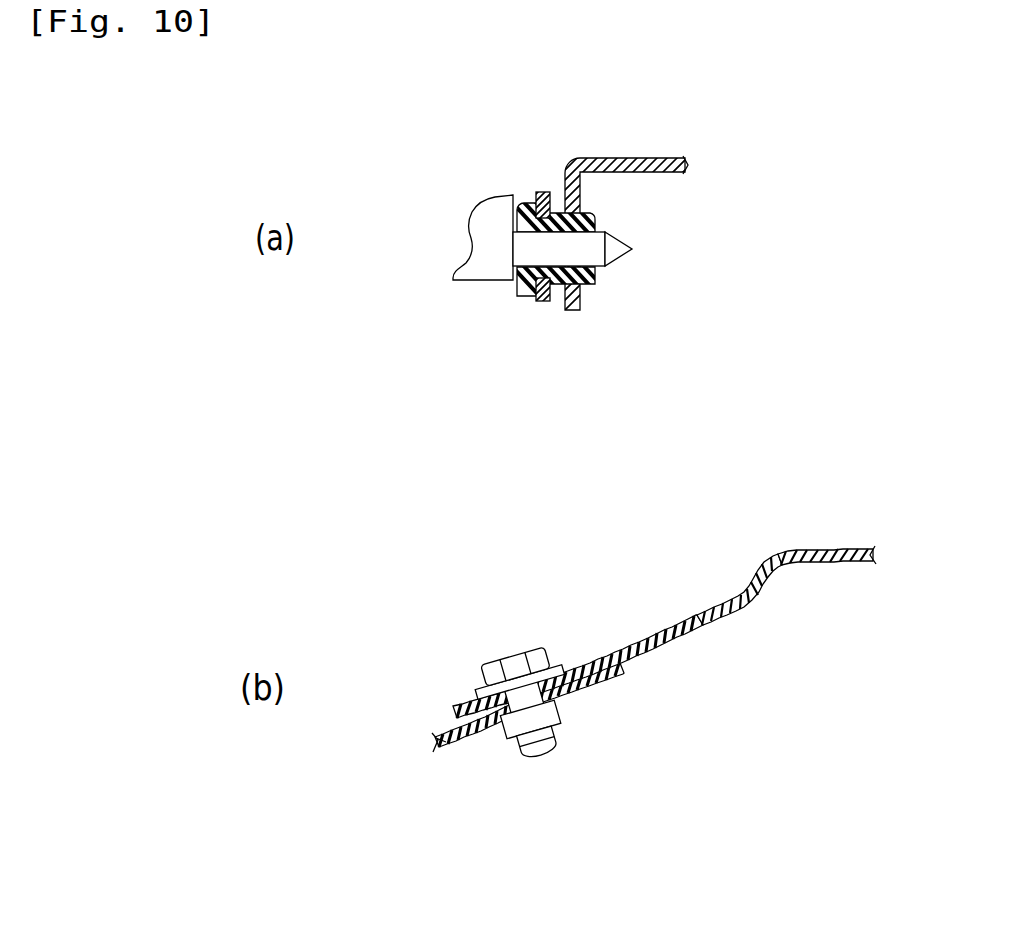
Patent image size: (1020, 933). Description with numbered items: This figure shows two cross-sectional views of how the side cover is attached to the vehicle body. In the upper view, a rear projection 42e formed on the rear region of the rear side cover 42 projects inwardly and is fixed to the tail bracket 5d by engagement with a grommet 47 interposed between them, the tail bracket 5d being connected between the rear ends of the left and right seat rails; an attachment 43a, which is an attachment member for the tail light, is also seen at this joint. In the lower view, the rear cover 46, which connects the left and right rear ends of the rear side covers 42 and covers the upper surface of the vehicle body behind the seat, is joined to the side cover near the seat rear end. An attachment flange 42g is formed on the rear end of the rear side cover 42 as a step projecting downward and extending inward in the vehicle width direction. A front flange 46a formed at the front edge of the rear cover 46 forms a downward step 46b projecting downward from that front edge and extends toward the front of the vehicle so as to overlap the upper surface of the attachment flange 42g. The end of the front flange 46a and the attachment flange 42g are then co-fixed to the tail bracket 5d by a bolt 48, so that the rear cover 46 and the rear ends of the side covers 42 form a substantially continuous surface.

The rear side cover 42 is at (468, 195).
The projection 42e is at (618, 233).
The attachment flange 42g is at (592, 697).
The attachment 43a is at (543, 193).
The grommet 47 is at (518, 292).
The tail bracket 5d is at (665, 157).
The rear cover 46 is at (834, 540).
The front flange 46a is at (578, 663).
The downward step 46b is at (740, 593).
The bolt 48 is at (508, 655).